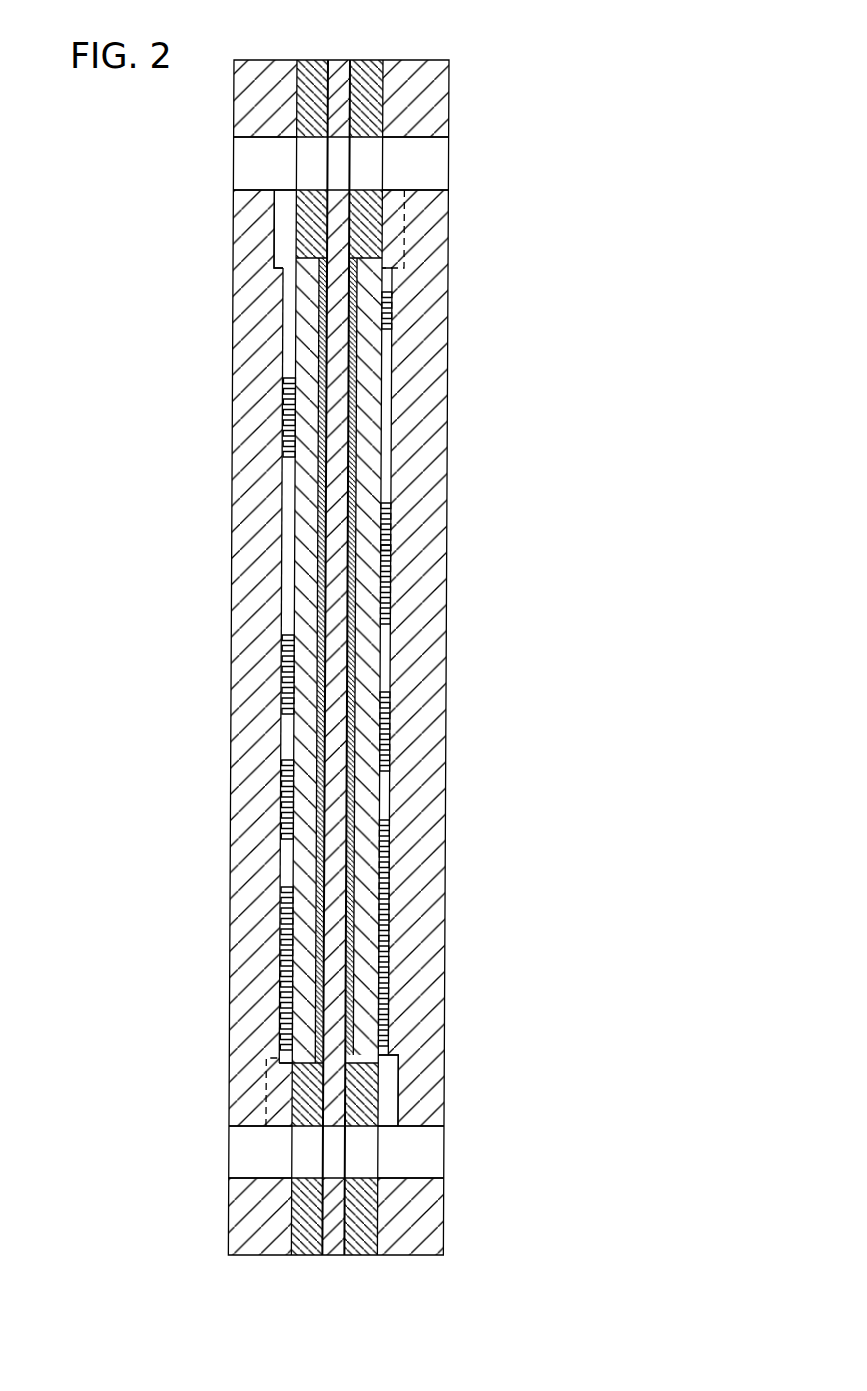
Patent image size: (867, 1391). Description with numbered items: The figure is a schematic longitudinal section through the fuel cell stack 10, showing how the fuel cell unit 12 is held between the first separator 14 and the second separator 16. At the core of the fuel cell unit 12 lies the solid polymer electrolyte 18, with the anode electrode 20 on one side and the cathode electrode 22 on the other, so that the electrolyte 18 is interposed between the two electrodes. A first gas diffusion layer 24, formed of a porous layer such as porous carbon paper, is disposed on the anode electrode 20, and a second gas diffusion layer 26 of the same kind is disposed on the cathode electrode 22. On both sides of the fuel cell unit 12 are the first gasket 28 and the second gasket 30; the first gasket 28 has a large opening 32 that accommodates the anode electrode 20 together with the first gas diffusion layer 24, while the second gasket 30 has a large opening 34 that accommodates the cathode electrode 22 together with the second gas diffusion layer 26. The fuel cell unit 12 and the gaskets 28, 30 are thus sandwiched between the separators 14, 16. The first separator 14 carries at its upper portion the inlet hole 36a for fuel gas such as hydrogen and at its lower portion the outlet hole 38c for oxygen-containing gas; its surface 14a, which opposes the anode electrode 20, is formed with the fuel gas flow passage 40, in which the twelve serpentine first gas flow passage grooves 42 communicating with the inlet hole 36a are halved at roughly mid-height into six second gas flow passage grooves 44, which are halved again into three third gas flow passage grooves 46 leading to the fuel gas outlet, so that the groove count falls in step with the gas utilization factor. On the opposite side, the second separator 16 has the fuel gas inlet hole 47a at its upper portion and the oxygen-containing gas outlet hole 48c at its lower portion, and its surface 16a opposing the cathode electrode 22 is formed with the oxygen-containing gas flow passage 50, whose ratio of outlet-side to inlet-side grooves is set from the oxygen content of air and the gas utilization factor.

The fuel cell stack 10 is at (576, 74).
The fuel cell unit 12 is at (372, 36).
The first separator 14 is at (270, 60).
The second separator 16 is at (411, 60).
The surface 14a is at (293, 381).
The surface 16a is at (382, 377).
The solid polymer electrolyte 18 is at (340, 790).
The anode electrode 20 is at (312, 622).
The cathode electrode 22 is at (360, 647).
The first gas diffusion layer 24 is at (315, 494).
The second gas diffusion layer 26 is at (370, 448).
The first gasket 28 is at (308, 1255).
The second gasket 30 is at (363, 1255).
The large opening 32 is at (282, 1036).
The large opening 34 is at (396, 1052).
The inlet hole 36a is at (263, 138).
The outlet hole 38c is at (257, 1126).
The fuel gas flow passage 40 is at (290, 320).
The first gas flow passage grooves 42 is at (290, 558).
The second gas flow passage grooves 44 is at (290, 850).
The third gas flow passage grooves 46 is at (268, 1069).
The fuel gas inlet hole 47a is at (407, 137).
The oxygen-containing gas outlet hole 48c is at (418, 1126).
The oxygen-containing gas flow passage 50 is at (397, 552).